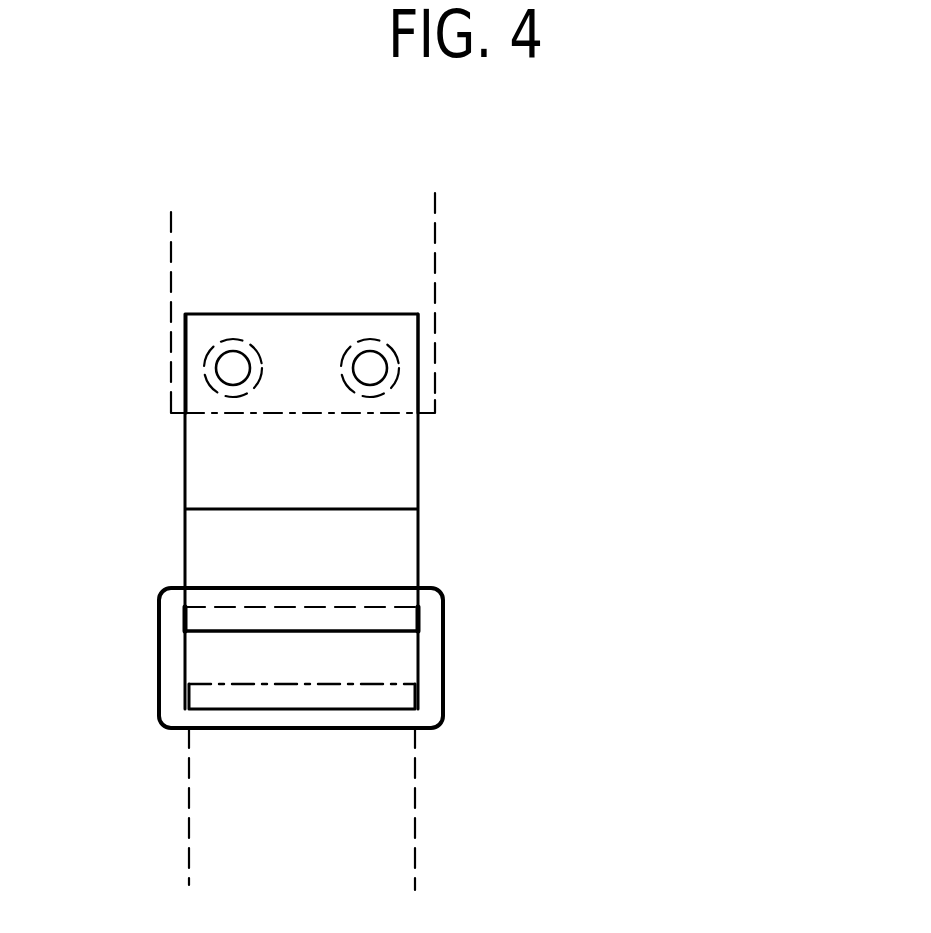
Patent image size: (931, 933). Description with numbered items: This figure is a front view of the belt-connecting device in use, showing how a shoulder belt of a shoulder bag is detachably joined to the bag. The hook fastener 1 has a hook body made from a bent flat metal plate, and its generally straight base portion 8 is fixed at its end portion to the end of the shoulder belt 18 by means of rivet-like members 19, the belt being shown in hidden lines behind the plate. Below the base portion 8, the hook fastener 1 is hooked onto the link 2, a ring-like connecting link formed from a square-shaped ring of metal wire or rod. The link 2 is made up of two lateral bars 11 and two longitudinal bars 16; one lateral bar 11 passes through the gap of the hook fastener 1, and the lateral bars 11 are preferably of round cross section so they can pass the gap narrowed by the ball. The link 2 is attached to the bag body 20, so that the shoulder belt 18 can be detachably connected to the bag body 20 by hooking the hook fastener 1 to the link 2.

The hook fastener 1 is at (388, 469).
The link 2 is at (430, 643).
The base portion 8 is at (405, 345).
The lateral bar 11 is at (228, 598).
The longitudinal bar 16 is at (170, 659).
The shoulder belt 18 is at (415, 237).
The rivet-like member 19 is at (360, 370).
The bag body 20 is at (400, 827).